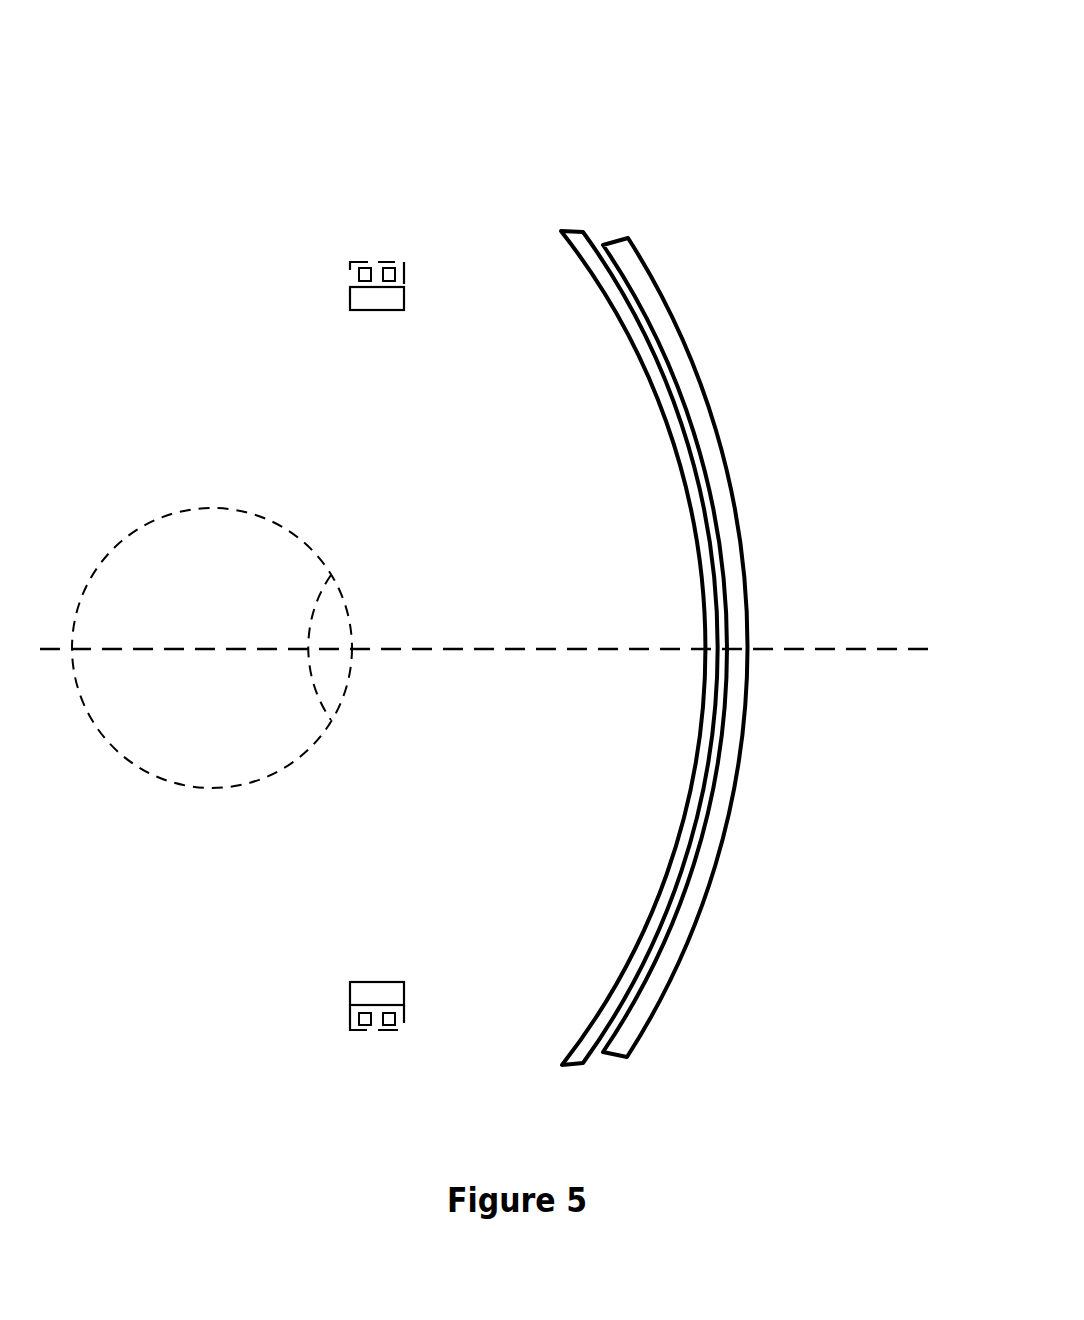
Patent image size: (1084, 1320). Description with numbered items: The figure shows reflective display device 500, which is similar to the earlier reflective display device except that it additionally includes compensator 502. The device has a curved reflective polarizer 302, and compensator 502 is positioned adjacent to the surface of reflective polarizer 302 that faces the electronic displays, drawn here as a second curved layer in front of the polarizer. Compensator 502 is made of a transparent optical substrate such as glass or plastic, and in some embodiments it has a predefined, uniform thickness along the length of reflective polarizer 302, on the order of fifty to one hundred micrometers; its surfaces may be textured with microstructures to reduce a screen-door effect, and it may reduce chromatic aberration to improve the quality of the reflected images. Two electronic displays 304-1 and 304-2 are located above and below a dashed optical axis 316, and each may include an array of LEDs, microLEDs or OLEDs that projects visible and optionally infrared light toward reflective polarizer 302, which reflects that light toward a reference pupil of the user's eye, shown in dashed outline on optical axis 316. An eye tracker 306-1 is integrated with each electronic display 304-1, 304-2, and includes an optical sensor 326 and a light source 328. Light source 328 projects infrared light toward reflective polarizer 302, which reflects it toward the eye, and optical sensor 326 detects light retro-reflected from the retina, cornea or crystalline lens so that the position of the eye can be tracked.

The reflective display device 500 is at (576, 86).
The reflective polarizer 302 is at (657, 287).
The compensator 502 is at (632, 350).
The optical axis 316 is at (865, 651).
The electronic display 304-1 is at (350, 297).
The electronic display 304-2 is at (350, 998).
The eye tracker 306-1 is at (357, 632).
The optical sensor 326 is at (365, 273).
The light source 328 is at (393, 273).